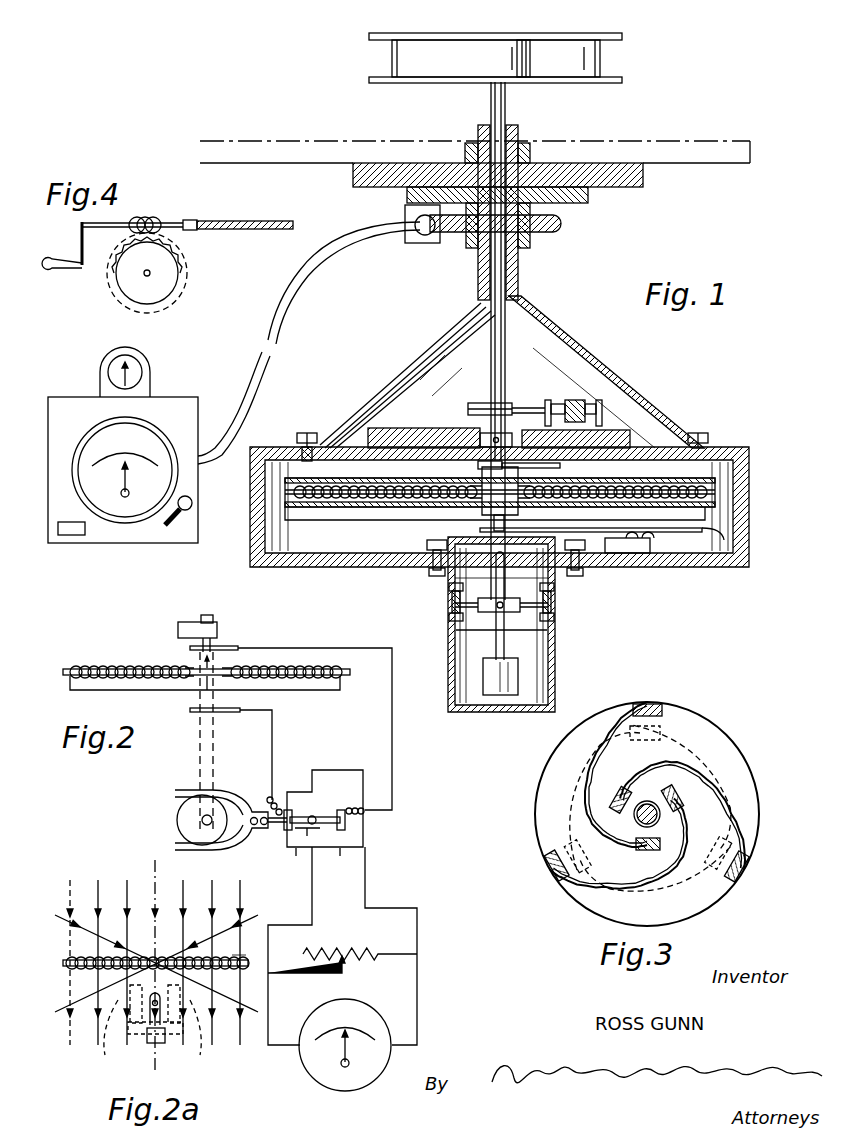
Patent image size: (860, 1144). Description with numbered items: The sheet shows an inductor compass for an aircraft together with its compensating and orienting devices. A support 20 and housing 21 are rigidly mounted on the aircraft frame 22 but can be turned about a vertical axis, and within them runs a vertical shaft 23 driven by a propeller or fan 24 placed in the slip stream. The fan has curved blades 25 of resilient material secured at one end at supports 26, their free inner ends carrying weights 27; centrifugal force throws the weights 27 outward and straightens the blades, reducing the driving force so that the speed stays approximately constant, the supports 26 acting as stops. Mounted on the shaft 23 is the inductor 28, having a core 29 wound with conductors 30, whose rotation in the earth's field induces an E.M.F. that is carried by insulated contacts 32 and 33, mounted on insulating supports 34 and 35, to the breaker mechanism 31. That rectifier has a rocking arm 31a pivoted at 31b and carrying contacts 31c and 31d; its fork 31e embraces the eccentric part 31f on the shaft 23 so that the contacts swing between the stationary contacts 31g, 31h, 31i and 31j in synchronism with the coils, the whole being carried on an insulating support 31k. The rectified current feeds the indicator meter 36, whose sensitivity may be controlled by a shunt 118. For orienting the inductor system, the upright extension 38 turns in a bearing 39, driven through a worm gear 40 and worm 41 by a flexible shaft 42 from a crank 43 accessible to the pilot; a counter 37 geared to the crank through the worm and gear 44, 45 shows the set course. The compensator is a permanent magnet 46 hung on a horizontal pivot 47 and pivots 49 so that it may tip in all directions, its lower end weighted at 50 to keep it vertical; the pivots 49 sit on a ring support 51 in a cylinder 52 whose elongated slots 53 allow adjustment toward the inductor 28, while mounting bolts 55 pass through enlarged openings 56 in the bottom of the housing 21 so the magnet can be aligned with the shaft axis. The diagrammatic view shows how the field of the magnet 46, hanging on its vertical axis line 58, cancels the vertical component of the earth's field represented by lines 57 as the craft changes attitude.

In FIG. 1, the support 20 is at (558, 398).
In FIG. 1, the housing 21 is at (738, 447).
In FIG. 1, the frame of the aircraft 22 is at (648, 147).
In FIG. 1, the vertical shaft 23 is at (514, 328).
In FIG. 2, the vertical shaft 23 is at (208, 614).
In FIG. 1, the propeller or fan 24 is at (577, 45).
In FIG. 3, the curved blades 25 is at (690, 770).
In FIG. 3, the supports 26 is at (650, 704).
In FIG. 3, the weights 27 is at (676, 798).
In FIG. 1, the inductor 28 is at (722, 480).
In FIG. 2, the inductor 28 is at (68, 663).
In FIG. 2A, the inductor 28 is at (240, 962).
In FIG. 1, the core 29 is at (722, 492).
In FIG. 2, the core 29 is at (350, 672).
In FIG. 1, the conductors 30 is at (375, 497).
In FIG. 2, the conductors 30 is at (125, 665).
In FIG. 2A, the conductors 30 is at (238, 956).
In FIG. 1, the breaker mechanism 31 is at (575, 398).
In FIG. 2, the rocking arm 31a is at (266, 830).
In FIG. 1, the pivot 31b is at (582, 408).
In FIG. 2, the pivot 31b is at (308, 830).
In FIG. 2, the contact 31c is at (346, 836).
In FIG. 2, the contact 31d is at (325, 808).
In FIG. 2, the fork 31e is at (222, 795).
In FIG. 1, the disc 31f is at (506, 400).
In FIG. 2, the disc 31f is at (180, 820).
In FIG. 2, the stationary contact 31g is at (352, 808).
In FIG. 2, the stationary contact 31h is at (341, 849).
In FIG. 2, the stationary contact 31i is at (273, 798).
In FIG. 2, the stationary contact 31j is at (296, 849).
In FIG. 1, the insulating support 31k is at (412, 430).
In FIG. 1, the contact 32 is at (500, 499).
In FIG. 2, the contact 32 is at (226, 647).
In FIG. 1, the contact 33 is at (482, 530).
In FIG. 2, the contact 33 is at (222, 712).
In FIG. 1, the insulating support 34 is at (634, 553).
In FIG. 1, the insulating support 35 is at (618, 436).
In FIG. 1, the indicator meter 36 is at (133, 465).
In FIG. 2A, the indicator meter 36 is at (380, 1062).
In FIG. 1, the counter 37 is at (72, 538).
In FIG. 4, the counter 37 is at (113, 285).
In FIG. 1, the upright extension 38 is at (512, 270).
In FIG. 1, the bearing 39 is at (590, 199).
In FIG. 1, the worm gear 40 is at (565, 226).
In FIG. 1, the worm 41 is at (423, 238).
In FIG. 1, the flexible shaft 42 is at (290, 305).
In FIG. 1, the crank 43 is at (180, 523).
In FIG. 4, the crank 43 is at (60, 270).
In FIG. 4, the worm 44 is at (146, 215).
In FIG. 4, the gear 45 is at (183, 252).
In FIG. 1, the permanent magnet 46 is at (505, 568).
In FIG. 2A, the permanent magnet 46 is at (150, 1040).
In FIG. 1, the horizontal pivot 47 is at (503, 608).
In FIG. 1, the horizontal pivots 49 is at (450, 600).
In FIG. 1, the weight 50 is at (503, 696).
In FIG. 2A, the weight 50 is at (161, 1044).
In FIG. 1, the ring support 51 is at (547, 632).
In FIG. 1, the cylinder 52 is at (556, 676).
In FIG. 1, the elongated slots 53 is at (552, 620).
In FIG. 1, the mounting bolts 55 is at (436, 541).
In FIG. 1, the enlarged openings or slots 56 is at (410, 562).
In FIG. 2A, the lines 57 is at (98, 892).
In FIG. 2A, the axis line 58 is at (155, 892).
In FIG. 2A, the shunt 118 is at (362, 962).